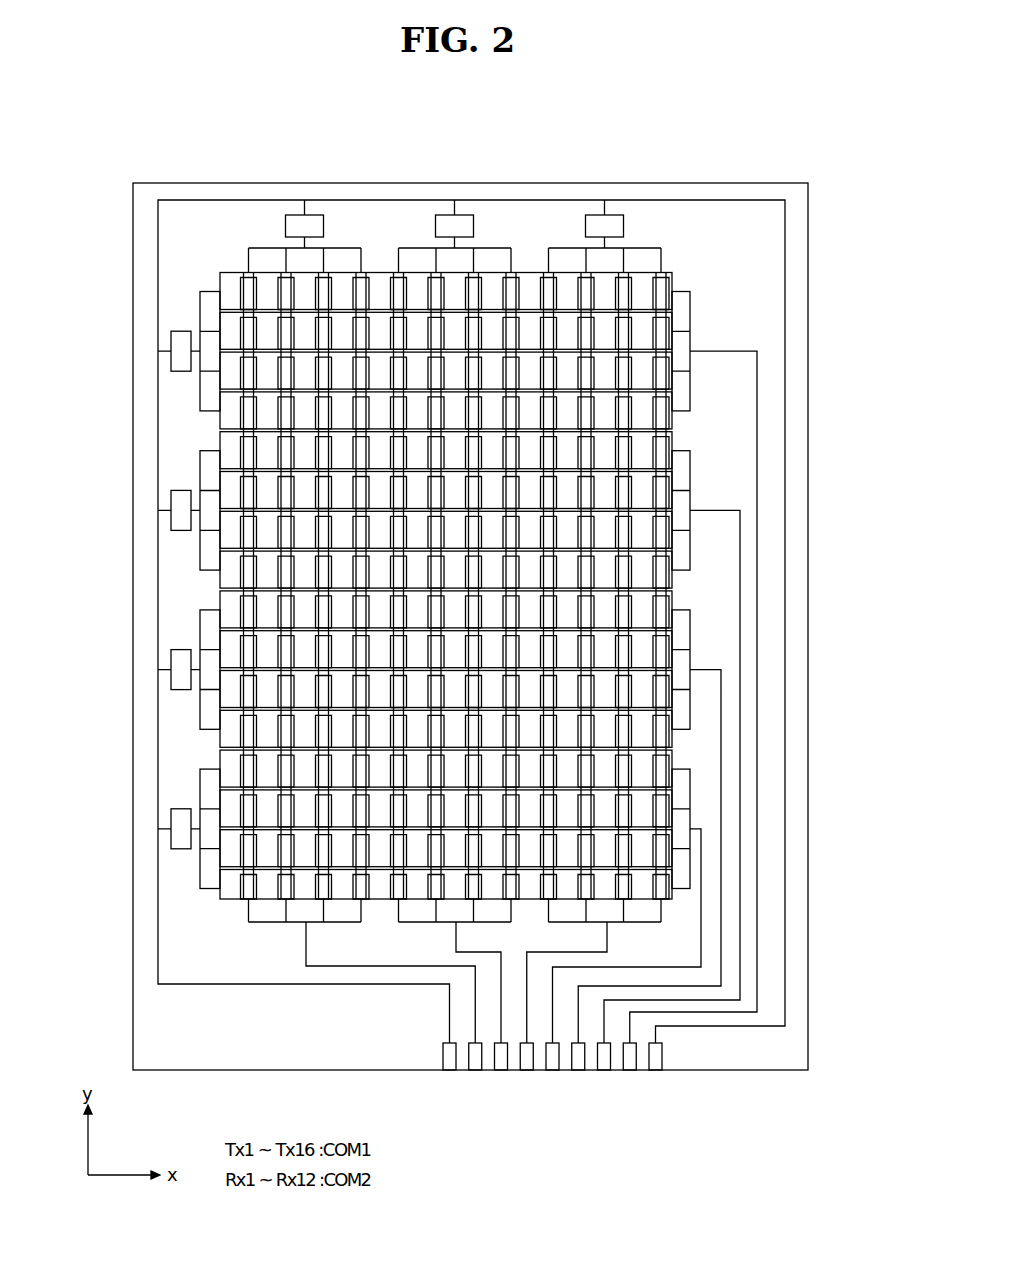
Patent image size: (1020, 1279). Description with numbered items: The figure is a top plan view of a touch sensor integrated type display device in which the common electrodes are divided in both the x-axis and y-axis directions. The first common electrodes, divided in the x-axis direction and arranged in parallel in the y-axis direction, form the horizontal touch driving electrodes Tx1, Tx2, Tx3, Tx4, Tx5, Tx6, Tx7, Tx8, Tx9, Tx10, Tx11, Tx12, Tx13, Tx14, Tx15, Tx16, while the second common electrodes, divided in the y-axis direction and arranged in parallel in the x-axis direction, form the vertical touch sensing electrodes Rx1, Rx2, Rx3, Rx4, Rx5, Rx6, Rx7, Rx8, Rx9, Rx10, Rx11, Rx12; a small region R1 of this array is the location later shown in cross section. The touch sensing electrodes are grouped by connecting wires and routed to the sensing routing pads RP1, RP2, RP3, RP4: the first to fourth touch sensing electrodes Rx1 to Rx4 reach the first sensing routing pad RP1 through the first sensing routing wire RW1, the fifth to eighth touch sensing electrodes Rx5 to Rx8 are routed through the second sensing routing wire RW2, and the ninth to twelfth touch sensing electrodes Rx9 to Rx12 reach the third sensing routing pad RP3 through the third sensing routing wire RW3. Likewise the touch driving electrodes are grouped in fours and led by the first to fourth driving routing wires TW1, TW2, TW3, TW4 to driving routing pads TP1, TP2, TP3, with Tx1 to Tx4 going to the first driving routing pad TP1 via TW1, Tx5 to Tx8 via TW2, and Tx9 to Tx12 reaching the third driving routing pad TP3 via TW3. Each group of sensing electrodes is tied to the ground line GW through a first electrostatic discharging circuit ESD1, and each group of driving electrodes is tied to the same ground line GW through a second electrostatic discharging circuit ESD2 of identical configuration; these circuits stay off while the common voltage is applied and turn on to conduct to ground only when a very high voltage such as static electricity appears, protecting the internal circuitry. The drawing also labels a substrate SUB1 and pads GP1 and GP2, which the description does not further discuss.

The region R1 is at (223, 270).
The ground line GW is at (158, 238).
The substrate SUB1 is at (765, 1071).
The first touch driving electrode Tx1 is at (220, 281).
The second touch driving electrode Tx2 is at (220, 320).
The third touch driving electrode Tx3 is at (220, 378).
The fourth touch driving electrode Tx4 is at (220, 418).
The fifth touch driving electrode Tx5 is at (220, 440).
The sixth touch driving electrode Tx6 is at (220, 476).
The seventh touch driving electrode Tx7 is at (220, 540).
The eighth touch driving electrode Tx8 is at (220, 575).
The ninth touch driving electrode Tx9 is at (220, 598).
The tenth touch driving electrode Tx10 is at (220, 637).
The eleventh touch driving electrode Tx11 is at (220, 695).
The twelfth touch driving electrode Tx12 is at (220, 734).
The thirteenth touch driving electrode Tx13 is at (220, 757).
The fourteenth touch driving electrode Tx14 is at (220, 796).
The fifteenth touch driving electrode Tx15 is at (220, 854).
The sixteenth touch driving electrode Tx16 is at (220, 876).
The first touch sensing electrode Rx1 is at (248, 271).
The second touch sensing electrode Rx2 is at (286, 271).
The third touch sensing electrode Rx3 is at (324, 271).
The fourth touch sensing electrode Rx4 is at (361, 271).
The fifth touch sensing electrode Rx5 is at (398, 271).
The sixth touch sensing electrode Rx6 is at (436, 271).
The seventh touch sensing electrode Rx7 is at (474, 271).
The eighth touch sensing electrode Rx8 is at (511, 271).
The ninth touch sensing electrode Rx9 is at (548, 271).
The tenth touch sensing electrode Rx10 is at (586, 271).
The eleventh touch sensing electrode Rx11 is at (624, 271).
The twelfth touch sensing electrode Rx12 is at (661, 271).
The first electrostatic discharging circuit ESD1 is at (455, 224).
The second electrostatic discharging circuit ESD2 is at (189, 590).
The first driving routing wire TW1 is at (757, 420).
The second driving routing wire TW2 is at (740, 580).
The third driving routing wire TW3 is at (721, 740).
The fourth driving routing wire TW4 is at (701, 898).
The first sensing routing wire RW1 is at (306, 940).
The second sensing routing wire RW2 is at (456, 940).
The third sensing routing wire RW3 is at (607, 940).
The first ground pad GP1 is at (449, 1071).
The second ground pad GP2 is at (656, 1071).
The first driving routing pad TP1 is at (476, 1071).
The second driving routing pad TP2 is at (501, 1071).
The third driving routing pad TP3 is at (527, 1071).
The first sensing routing pad RP1 is at (630, 1071).
The second sensing routing pad RP2 is at (604, 1071).
The third sensing routing pad RP3 is at (578, 1071).
The fourth sensing routing pad RP4 is at (552, 1071).